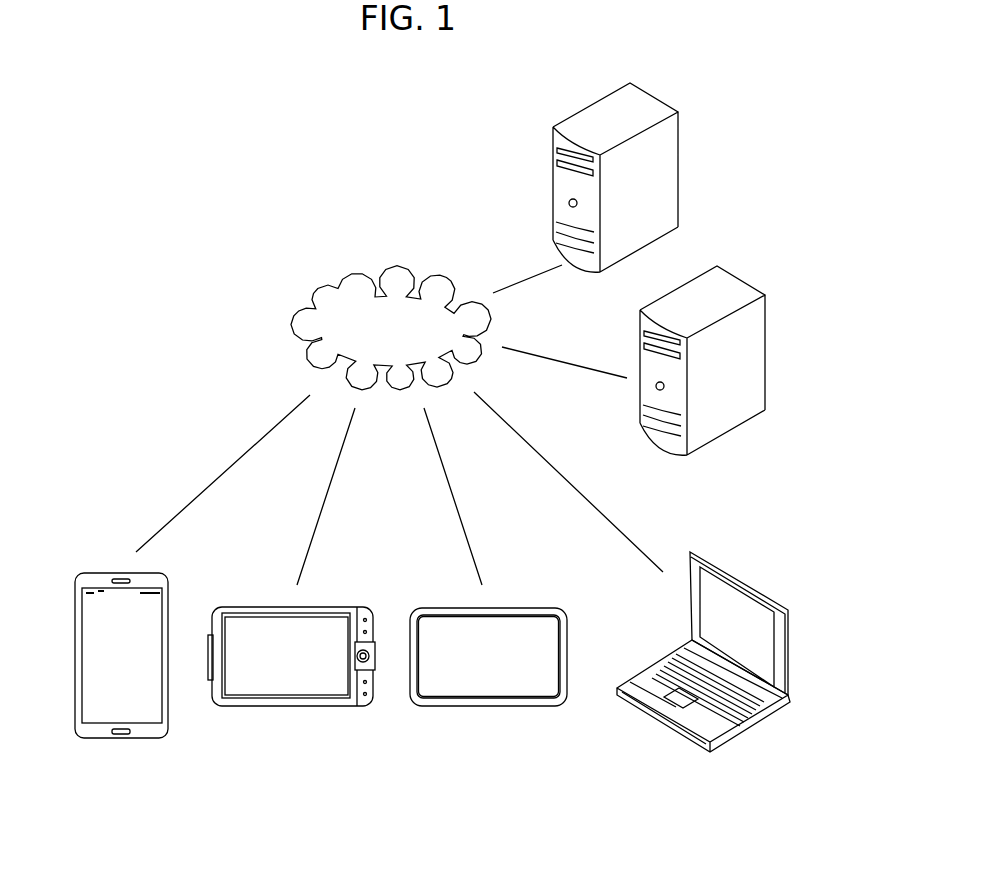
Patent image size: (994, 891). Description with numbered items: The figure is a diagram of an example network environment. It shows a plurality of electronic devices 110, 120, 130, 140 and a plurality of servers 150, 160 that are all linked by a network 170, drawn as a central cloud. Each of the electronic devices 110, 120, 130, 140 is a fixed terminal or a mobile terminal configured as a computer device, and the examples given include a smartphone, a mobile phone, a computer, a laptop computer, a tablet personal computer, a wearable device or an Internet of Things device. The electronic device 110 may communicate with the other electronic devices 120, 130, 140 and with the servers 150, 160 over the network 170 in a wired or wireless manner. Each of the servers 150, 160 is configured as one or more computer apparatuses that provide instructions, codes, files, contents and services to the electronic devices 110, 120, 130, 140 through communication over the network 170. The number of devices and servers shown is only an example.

The electronic device 110 is at (120, 738).
The electronic device 120 is at (293, 706).
The electronic device 130 is at (488, 706).
The electronic device 140 is at (790, 650).
The server 150 is at (767, 350).
The server 160 is at (680, 167).
The network 170 is at (396, 266).